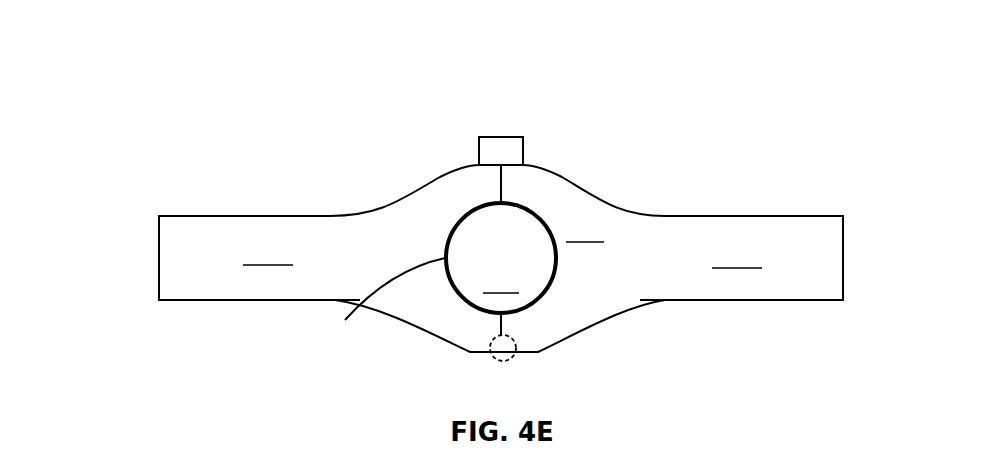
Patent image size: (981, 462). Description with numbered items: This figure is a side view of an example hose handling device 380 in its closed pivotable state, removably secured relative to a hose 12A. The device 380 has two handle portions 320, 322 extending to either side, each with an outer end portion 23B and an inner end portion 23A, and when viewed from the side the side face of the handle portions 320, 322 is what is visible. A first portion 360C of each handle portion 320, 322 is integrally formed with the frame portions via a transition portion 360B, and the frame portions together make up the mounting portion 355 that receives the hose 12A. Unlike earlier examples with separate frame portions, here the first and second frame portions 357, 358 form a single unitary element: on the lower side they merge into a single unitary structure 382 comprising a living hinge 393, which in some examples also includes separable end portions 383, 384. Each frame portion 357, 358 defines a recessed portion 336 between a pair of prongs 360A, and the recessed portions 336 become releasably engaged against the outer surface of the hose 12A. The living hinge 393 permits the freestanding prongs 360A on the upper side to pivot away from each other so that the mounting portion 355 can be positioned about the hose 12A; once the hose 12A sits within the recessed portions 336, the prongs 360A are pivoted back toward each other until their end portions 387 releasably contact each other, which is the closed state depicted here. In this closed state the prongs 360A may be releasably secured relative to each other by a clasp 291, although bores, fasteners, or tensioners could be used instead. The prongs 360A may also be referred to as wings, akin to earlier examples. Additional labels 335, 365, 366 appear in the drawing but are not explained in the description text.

The device 380 is at (224, 211).
The handle portion 320 is at (185, 305).
The handle portion 322 is at (827, 211).
The first portion 360C is at (502, 256).
The outer end portion 23B is at (158, 273).
The mounting portion 355 is at (599, 111).
The first frame portion 357 is at (449, 162).
The second frame portion 358 is at (564, 175).
The transition portion 360B is at (413, 203).
The inner end portion 23A is at (393, 238).
The recessed portion 336 is at (457, 218).
The clasp 291 is at (512, 137).
The prongs 360A is at (462, 165).
The end portions 387 is at (507, 180).
The hose 12A is at (501, 258).
The separable end portion 383 is at (497, 318).
The separable end portion 384 is at (515, 328).
The single unitary structure 382 is at (469, 355).
The living hinge 393 is at (507, 365).
The diagonal strap 335 is at (379, 301).
The bottom left bend 365 is at (468, 337).
The bottom right bend 366 is at (540, 345).